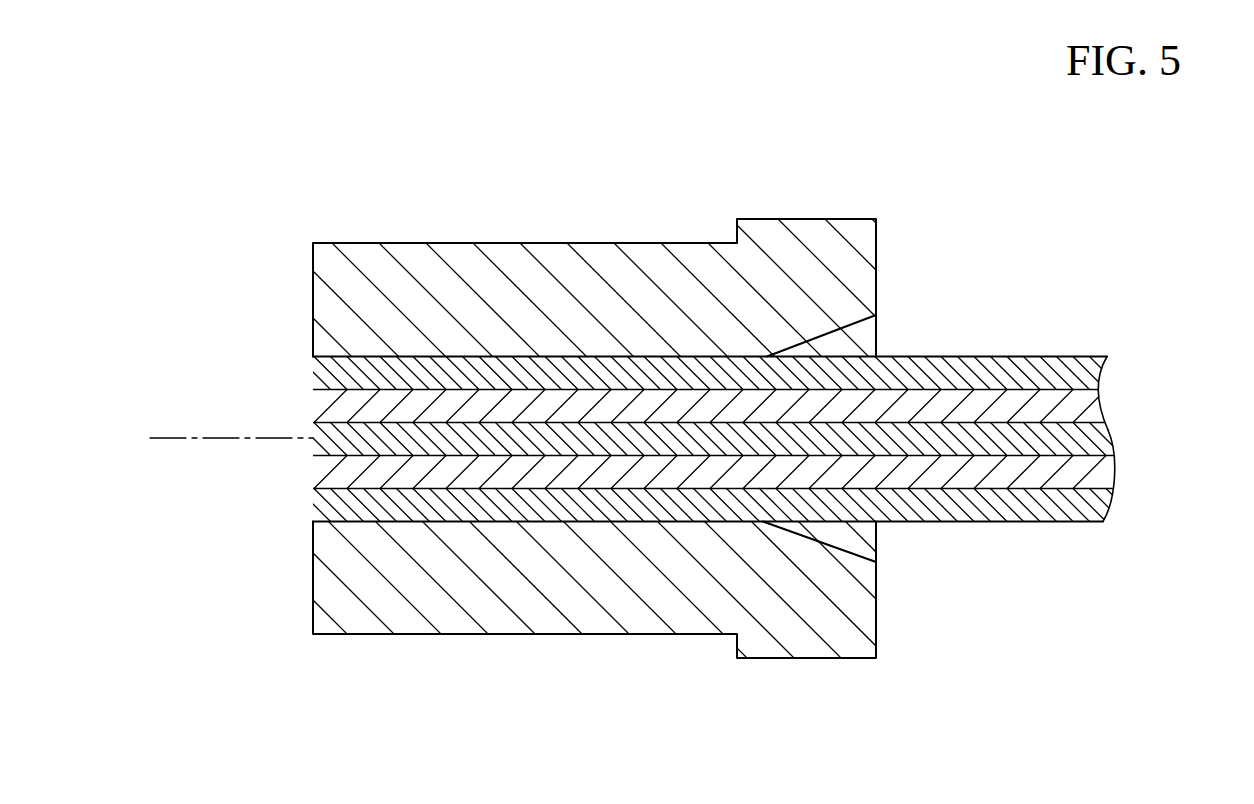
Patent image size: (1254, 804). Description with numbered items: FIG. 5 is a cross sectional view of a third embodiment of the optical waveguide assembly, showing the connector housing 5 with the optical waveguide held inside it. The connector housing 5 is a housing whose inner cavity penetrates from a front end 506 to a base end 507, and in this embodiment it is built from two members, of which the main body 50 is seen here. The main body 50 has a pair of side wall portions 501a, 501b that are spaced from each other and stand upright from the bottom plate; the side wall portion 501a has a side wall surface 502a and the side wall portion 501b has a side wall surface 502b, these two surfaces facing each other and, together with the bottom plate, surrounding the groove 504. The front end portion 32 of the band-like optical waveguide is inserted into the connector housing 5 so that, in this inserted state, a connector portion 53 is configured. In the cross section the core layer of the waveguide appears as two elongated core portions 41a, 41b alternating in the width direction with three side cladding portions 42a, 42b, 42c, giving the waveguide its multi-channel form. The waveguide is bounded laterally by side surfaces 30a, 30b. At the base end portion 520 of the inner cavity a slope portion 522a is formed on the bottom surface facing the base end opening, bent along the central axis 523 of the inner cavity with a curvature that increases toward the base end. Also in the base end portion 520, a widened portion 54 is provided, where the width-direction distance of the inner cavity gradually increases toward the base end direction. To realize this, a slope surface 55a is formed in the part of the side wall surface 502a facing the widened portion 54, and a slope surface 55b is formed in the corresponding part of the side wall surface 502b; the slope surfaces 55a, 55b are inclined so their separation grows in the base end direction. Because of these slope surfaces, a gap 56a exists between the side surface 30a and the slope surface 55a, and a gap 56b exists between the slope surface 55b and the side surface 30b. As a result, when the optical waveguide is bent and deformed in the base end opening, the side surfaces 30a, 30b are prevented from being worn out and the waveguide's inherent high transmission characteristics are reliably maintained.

The connector housing 5 is at (418, 647).
The side surface 30a is at (1063, 522).
The side surface 30b is at (1063, 357).
The front end portion 32 is at (398, 473).
The core portion 41a is at (1090, 476).
The core portion 41b is at (1083, 407).
The side cladding portion 42a is at (1084, 512).
The side cladding portion 42b is at (1085, 443).
The side cladding portion 42c is at (1085, 378).
The main body 50 is at (643, 634).
The connector portion 53 is at (427, 738).
The widened portion 54 is at (868, 546).
The slope surface 55a is at (822, 546).
The slope surface 55b is at (808, 330).
The gap 56a is at (878, 562).
The gap 56b is at (877, 325).
The side wall portion 501a is at (579, 603).
The side wall portion 501b is at (543, 300).
The side wall surface 502a is at (478, 522).
The side wall surface 502b is at (438, 356).
The groove 504 is at (606, 356).
The front end 506 is at (313, 300).
The base end 507 is at (877, 247).
The base end portion 520 is at (868, 532).
The slope portion 522a is at (863, 333).
The central axis 523 is at (222, 438).